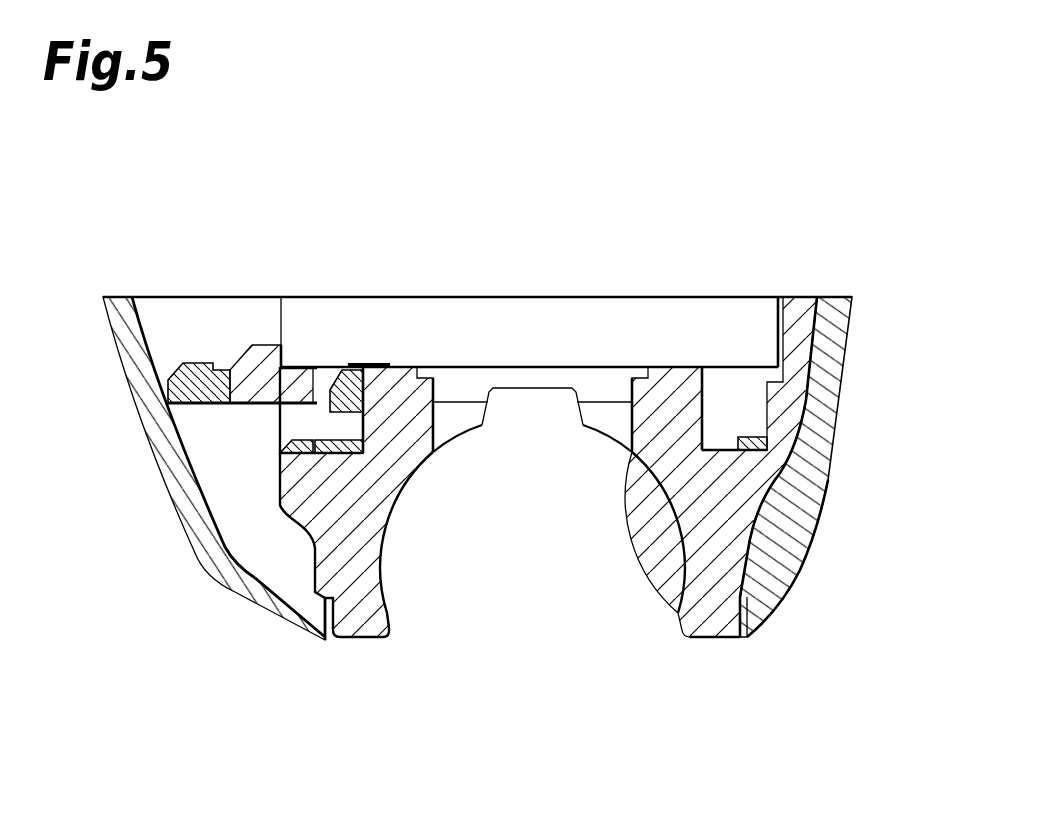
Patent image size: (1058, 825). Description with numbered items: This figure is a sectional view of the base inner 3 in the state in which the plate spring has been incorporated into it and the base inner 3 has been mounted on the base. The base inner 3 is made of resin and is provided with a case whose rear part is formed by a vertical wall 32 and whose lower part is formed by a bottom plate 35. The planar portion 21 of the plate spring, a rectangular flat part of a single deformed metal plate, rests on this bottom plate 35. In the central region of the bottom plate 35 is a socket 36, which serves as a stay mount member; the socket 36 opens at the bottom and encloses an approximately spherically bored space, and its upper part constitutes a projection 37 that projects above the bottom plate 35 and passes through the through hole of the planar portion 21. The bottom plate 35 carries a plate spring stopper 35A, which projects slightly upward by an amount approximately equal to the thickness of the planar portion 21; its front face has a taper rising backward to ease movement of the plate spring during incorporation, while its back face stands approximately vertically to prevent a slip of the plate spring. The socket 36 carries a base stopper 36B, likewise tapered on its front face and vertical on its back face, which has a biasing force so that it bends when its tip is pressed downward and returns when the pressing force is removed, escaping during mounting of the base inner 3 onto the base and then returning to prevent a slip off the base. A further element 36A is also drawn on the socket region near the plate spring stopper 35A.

The base inner 3 is at (648, 285).
The planar portion 21 is at (348, 457).
The vertical wall 32 is at (812, 471).
The bottom plate 35 is at (295, 500).
The plate spring stopper 35A is at (292, 446).
The socket 36 is at (368, 606).
The protrusion 36A is at (352, 415).
The base stopper 36B is at (220, 380).
The projection 37 is at (397, 382).